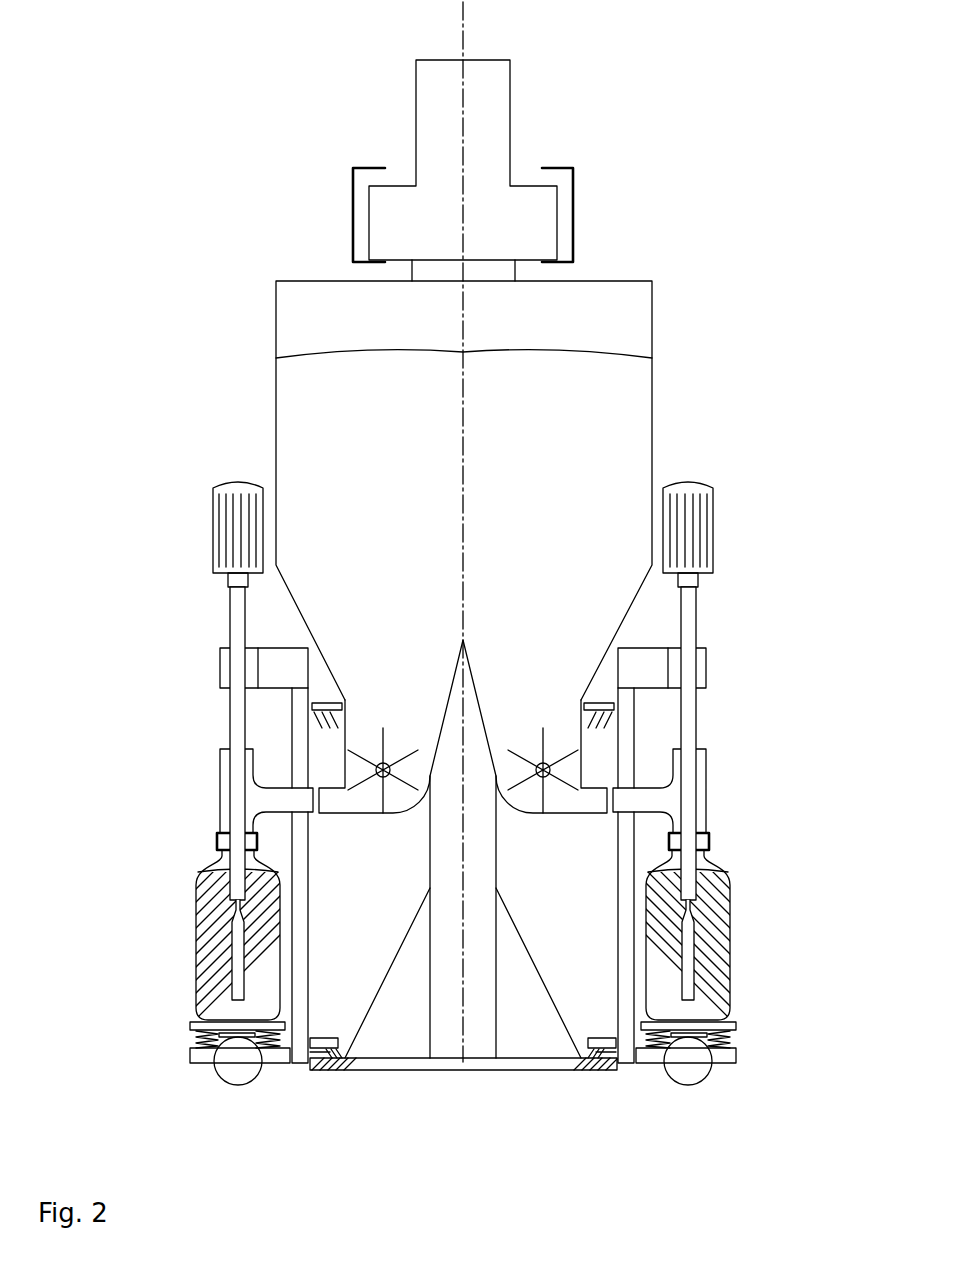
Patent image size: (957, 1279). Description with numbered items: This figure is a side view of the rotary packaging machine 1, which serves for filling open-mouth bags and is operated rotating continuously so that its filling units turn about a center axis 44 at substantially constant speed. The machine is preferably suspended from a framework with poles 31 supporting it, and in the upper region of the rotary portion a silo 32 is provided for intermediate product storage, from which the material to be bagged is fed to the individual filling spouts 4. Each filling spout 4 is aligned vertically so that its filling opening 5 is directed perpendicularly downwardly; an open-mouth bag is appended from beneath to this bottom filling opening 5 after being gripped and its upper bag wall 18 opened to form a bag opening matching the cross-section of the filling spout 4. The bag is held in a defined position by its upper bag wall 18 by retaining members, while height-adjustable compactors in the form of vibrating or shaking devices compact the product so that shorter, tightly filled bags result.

The rotary packaging machine 1 is at (157, 127).
The filling spout 4 is at (220, 818).
The filling opening 5 is at (220, 853).
The upper bag wall 18 is at (708, 845).
The pole 31 is at (353, 157).
The silo 32 is at (593, 300).
The center axis 44 is at (470, 45).